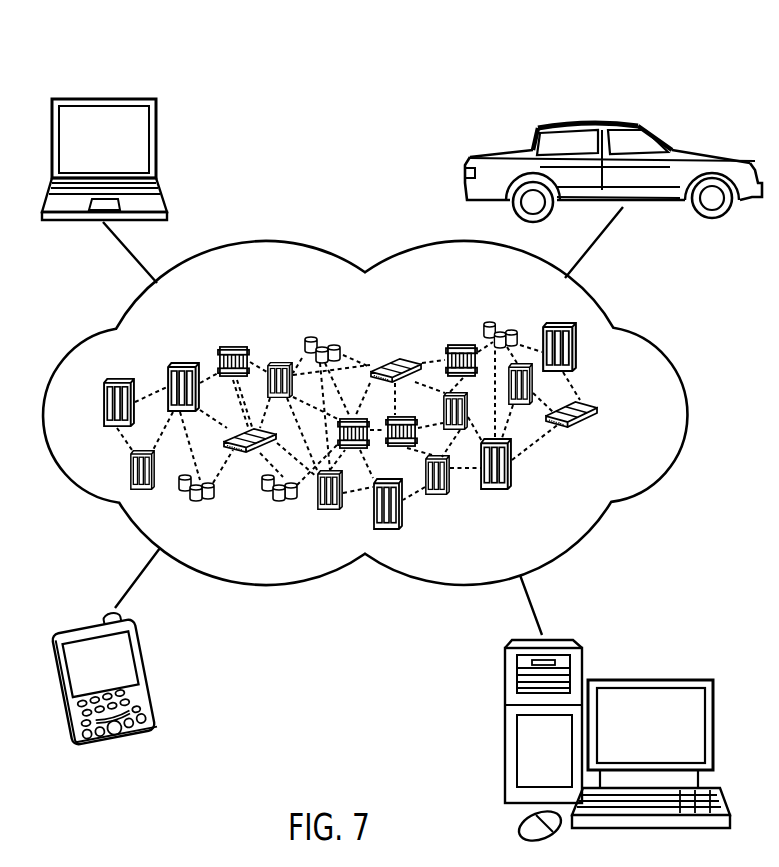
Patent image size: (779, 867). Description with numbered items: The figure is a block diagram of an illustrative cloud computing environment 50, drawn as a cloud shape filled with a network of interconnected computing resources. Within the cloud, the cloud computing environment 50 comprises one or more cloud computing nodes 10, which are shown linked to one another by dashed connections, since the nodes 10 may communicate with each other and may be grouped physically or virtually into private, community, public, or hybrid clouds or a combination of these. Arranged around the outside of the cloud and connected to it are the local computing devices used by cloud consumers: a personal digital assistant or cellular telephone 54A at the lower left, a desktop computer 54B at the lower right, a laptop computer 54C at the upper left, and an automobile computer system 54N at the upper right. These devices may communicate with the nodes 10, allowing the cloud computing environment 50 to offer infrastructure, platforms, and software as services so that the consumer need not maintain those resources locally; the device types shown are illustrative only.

The cloud computing node 10 is at (605, 415).
The cloud computing environment 50 is at (661, 333).
The personal digital assistant (PDA) or cellular telephone 54A is at (87, 622).
The desktop computer 54B is at (650, 678).
The laptop computer 54C is at (104, 98).
The automobile computer system 54N is at (593, 127).